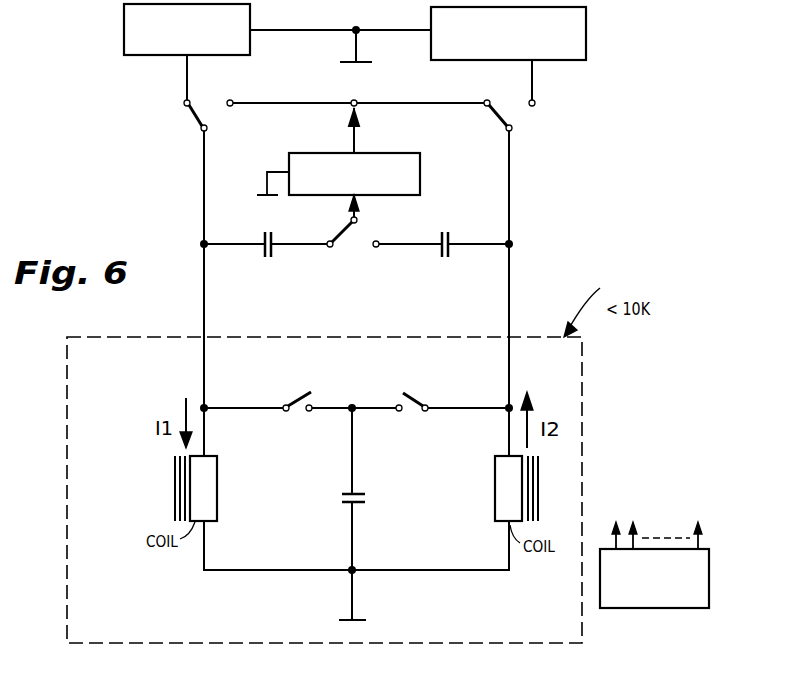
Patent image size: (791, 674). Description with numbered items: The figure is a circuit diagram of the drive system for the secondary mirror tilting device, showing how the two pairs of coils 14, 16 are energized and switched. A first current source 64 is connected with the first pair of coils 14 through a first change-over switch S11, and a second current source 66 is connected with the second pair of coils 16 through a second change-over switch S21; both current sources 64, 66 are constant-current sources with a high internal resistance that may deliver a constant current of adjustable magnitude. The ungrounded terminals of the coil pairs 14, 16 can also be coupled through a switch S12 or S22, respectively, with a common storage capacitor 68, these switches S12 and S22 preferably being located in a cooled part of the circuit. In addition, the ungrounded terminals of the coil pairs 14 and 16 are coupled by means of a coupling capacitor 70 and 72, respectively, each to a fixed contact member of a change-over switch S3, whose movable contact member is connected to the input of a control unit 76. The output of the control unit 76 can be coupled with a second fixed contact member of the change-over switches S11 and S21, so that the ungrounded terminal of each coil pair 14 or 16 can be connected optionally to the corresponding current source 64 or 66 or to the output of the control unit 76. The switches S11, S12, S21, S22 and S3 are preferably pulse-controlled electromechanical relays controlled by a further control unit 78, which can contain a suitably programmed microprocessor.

The first pair of coils 14 is at (217, 493).
The second pair of coils 16 is at (495, 493).
The first current source 64 is at (124, 32).
The second current source 66 is at (586, 33).
The storage capacitor 68 is at (365, 498).
The coupling capacitor 70 is at (268, 257).
The coupling capacitor 72 is at (445, 257).
The control unit 76 is at (420, 172).
The control unit 78 is at (657, 608).
The first change-over switch S11 is at (190, 123).
The second change-over switch S21 is at (503, 118).
The change-over switch S3 is at (345, 234).
The switch S12 is at (298, 400).
The switch S22 is at (418, 399).